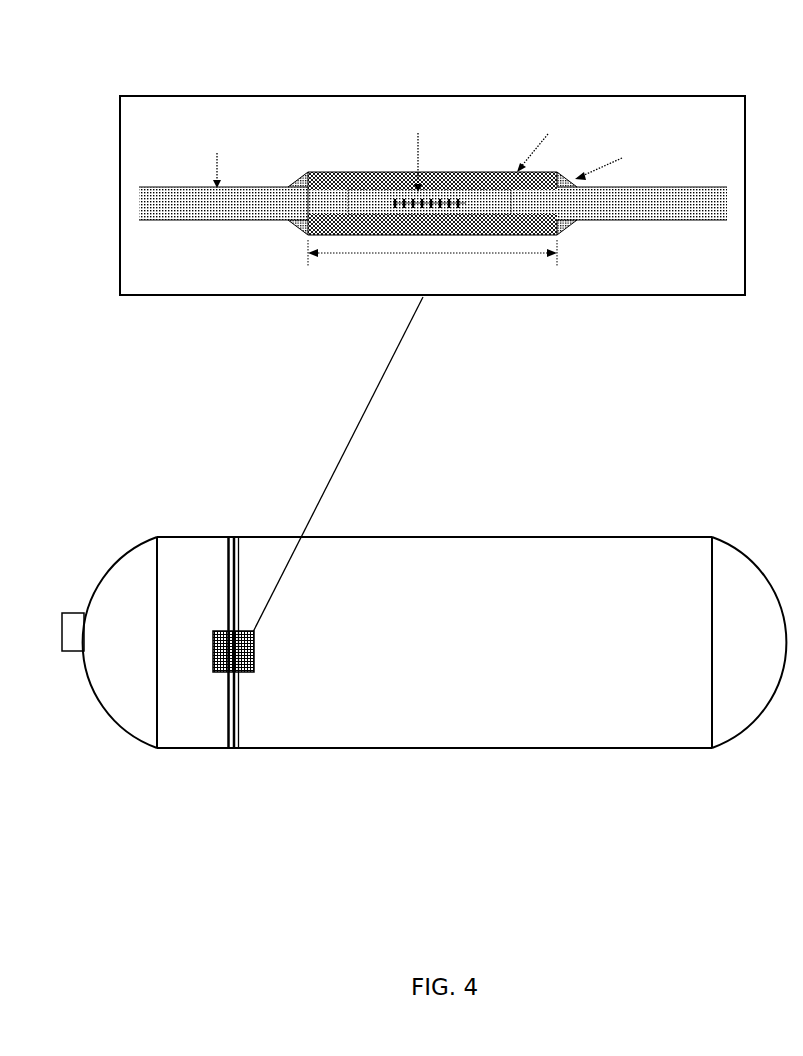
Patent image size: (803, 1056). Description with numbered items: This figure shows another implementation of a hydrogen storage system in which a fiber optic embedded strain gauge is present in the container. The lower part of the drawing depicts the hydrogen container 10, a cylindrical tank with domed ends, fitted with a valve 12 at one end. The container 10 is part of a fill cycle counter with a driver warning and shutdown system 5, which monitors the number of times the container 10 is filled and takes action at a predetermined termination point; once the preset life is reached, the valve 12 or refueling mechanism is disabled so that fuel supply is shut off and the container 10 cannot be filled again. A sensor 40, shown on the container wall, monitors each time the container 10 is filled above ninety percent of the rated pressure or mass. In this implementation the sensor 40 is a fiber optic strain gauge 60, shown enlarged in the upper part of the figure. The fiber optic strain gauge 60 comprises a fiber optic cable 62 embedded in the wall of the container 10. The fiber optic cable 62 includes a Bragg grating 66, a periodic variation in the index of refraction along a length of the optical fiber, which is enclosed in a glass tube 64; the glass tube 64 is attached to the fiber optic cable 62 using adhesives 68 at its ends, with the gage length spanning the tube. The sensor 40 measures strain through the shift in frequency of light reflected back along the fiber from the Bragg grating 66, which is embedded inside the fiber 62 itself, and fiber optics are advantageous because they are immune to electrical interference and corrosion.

The fiber optic strain gauge 60 is at (118, 128).
The fiber optic cable 62 is at (274, 187).
The glass tube 64 is at (482, 168).
The Bragg grating 66 is at (465, 205).
The adhesives 68 is at (557, 187).
The hydrogen container 10 is at (368, 720).
The driver warning and shutdown system 5 is at (157, 607).
The valve 12 is at (63, 652).
The sensor 40 is at (253, 631).